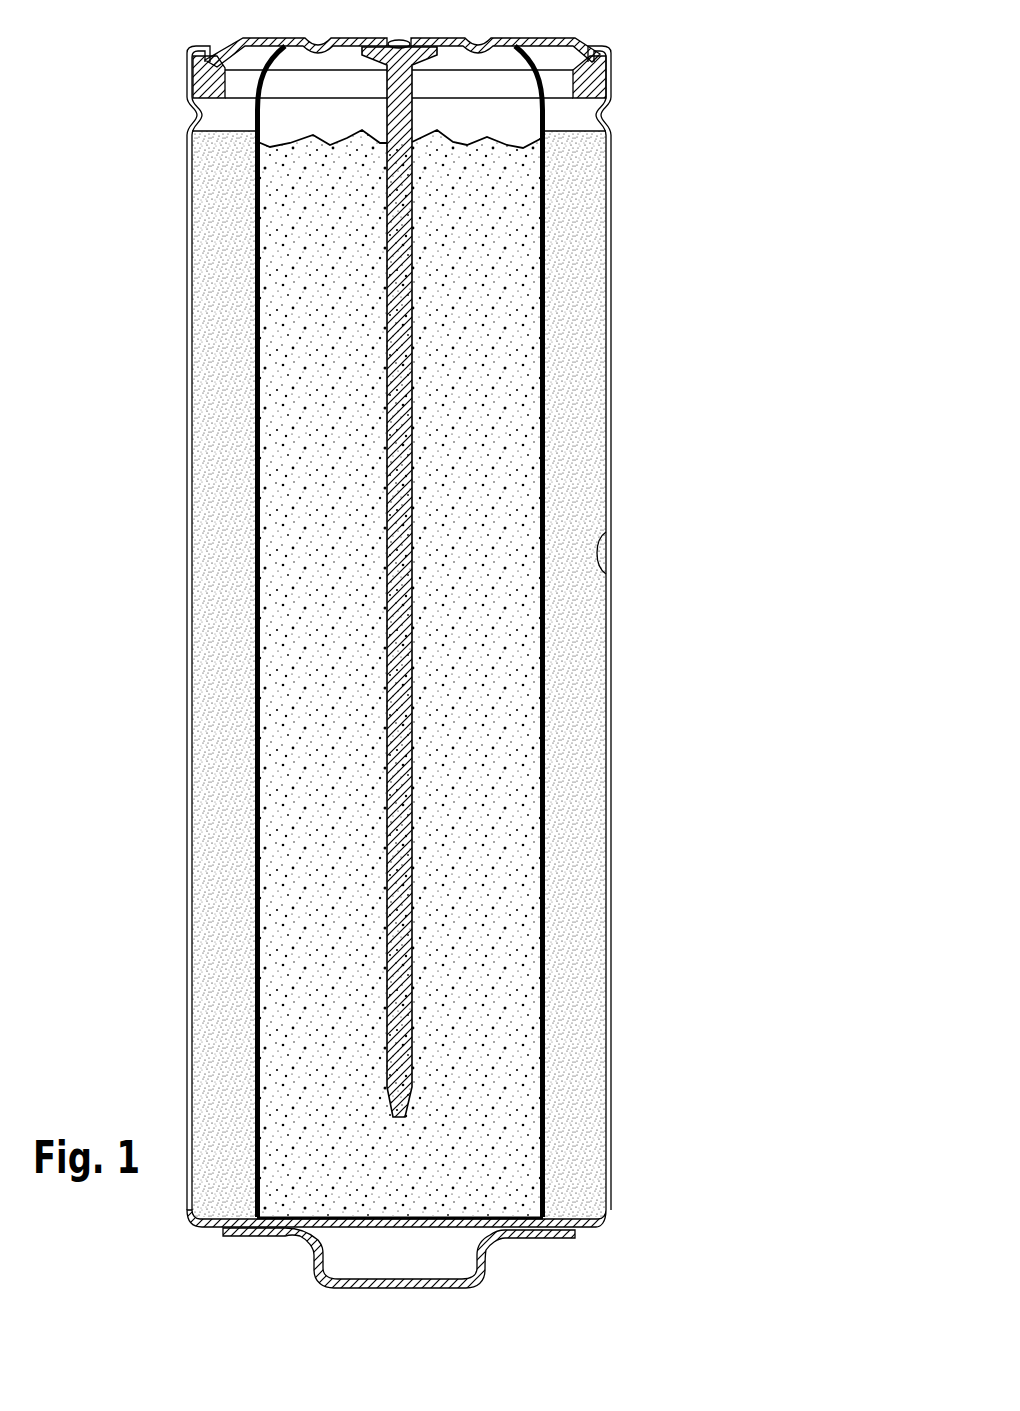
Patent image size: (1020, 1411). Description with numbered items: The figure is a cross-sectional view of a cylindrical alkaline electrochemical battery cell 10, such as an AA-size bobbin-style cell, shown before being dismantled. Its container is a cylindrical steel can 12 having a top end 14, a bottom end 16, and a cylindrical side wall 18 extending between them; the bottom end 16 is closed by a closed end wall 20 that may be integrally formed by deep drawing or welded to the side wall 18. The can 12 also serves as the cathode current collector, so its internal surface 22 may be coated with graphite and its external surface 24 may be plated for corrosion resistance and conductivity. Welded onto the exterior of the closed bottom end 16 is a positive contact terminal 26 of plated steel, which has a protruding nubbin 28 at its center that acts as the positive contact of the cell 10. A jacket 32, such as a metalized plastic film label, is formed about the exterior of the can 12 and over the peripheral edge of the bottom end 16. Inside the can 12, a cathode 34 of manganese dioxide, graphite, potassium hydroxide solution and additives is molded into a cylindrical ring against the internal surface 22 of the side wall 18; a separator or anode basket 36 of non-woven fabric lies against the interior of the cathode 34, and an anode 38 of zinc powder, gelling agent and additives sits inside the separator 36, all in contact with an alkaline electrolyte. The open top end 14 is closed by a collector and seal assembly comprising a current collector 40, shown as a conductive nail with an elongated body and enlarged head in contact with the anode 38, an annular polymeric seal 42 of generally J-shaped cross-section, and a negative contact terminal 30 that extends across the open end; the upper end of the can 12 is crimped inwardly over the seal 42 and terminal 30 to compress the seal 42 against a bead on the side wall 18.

The electrochemical battery cell 10 is at (120, 693).
The steel can 12 is at (158, 319).
The top end 14 is at (486, 1239).
The bottom end 16 is at (533, 45).
The cylindrical side wall 18 is at (608, 417).
The closed end wall 20 is at (473, 1213).
The internal surface 22 is at (607, 577).
The external surface 24 is at (608, 343).
The positive contact terminal 26 is at (413, 1293).
The protruding nubbin 28 is at (355, 1291).
The negative contact terminal 30 is at (353, 40).
The jacket 32 is at (190, 497).
The cathode 34 is at (568, 815).
The separator or anode basket 36 is at (255, 900).
The anode 38 is at (302, 1008).
The current collector pin 40 is at (400, 270).
The seal 42 is at (613, 70).